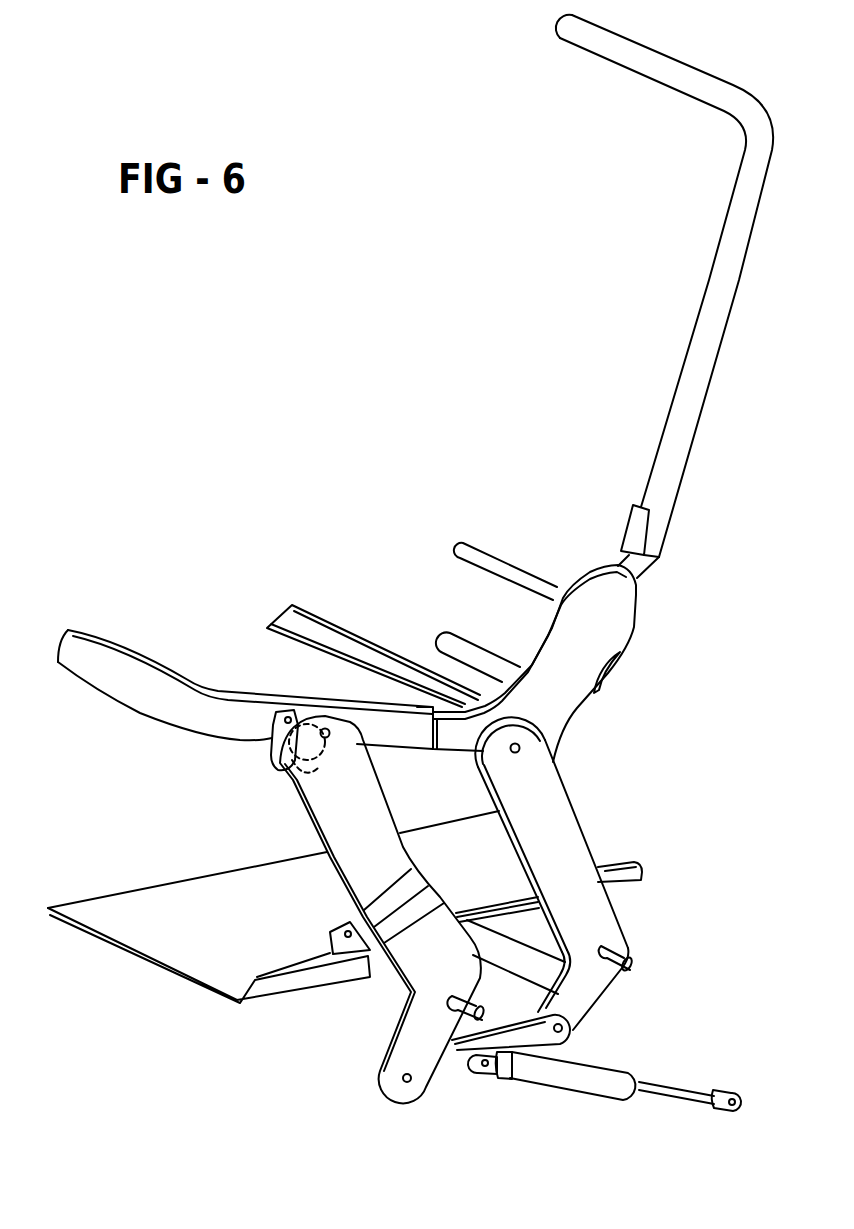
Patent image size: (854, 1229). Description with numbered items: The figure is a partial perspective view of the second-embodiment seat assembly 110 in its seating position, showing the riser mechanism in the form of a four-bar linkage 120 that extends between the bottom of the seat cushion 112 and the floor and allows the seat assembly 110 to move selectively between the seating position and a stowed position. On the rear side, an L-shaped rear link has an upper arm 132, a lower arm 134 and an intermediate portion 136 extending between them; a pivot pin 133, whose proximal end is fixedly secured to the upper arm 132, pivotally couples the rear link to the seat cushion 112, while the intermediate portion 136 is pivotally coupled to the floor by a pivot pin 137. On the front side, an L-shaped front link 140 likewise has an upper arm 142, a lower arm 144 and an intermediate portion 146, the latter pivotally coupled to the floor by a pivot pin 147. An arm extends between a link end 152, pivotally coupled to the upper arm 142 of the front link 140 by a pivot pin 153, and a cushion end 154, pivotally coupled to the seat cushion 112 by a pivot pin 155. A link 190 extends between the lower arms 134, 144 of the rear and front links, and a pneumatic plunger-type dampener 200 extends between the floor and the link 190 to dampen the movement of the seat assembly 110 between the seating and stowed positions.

The seat assembly 110 is at (189, 401).
The seat cushion 112 is at (130, 673).
The four-bar linkage 120 is at (709, 781).
The upper arm 132 is at (556, 832).
The pivot pin 133 is at (519, 745).
The lower arm 134 is at (587, 997).
The intermediate portion 136 is at (637, 933).
The pivot pin 137 is at (635, 966).
The front link 140 is at (328, 860).
The upper arm 142 is at (313, 823).
The lower arm 144 is at (383, 1090).
The intermediate portion 146 is at (470, 977).
The pivot pin 147 is at (462, 1017).
The link end 152 is at (291, 706).
The pivot pin 153 is at (328, 730).
The cushion end 154 is at (266, 755).
The pivot pin 155 is at (283, 778).
The link 190 is at (470, 1057).
The pneumatic plunger-type dampener 200 is at (623, 1067).